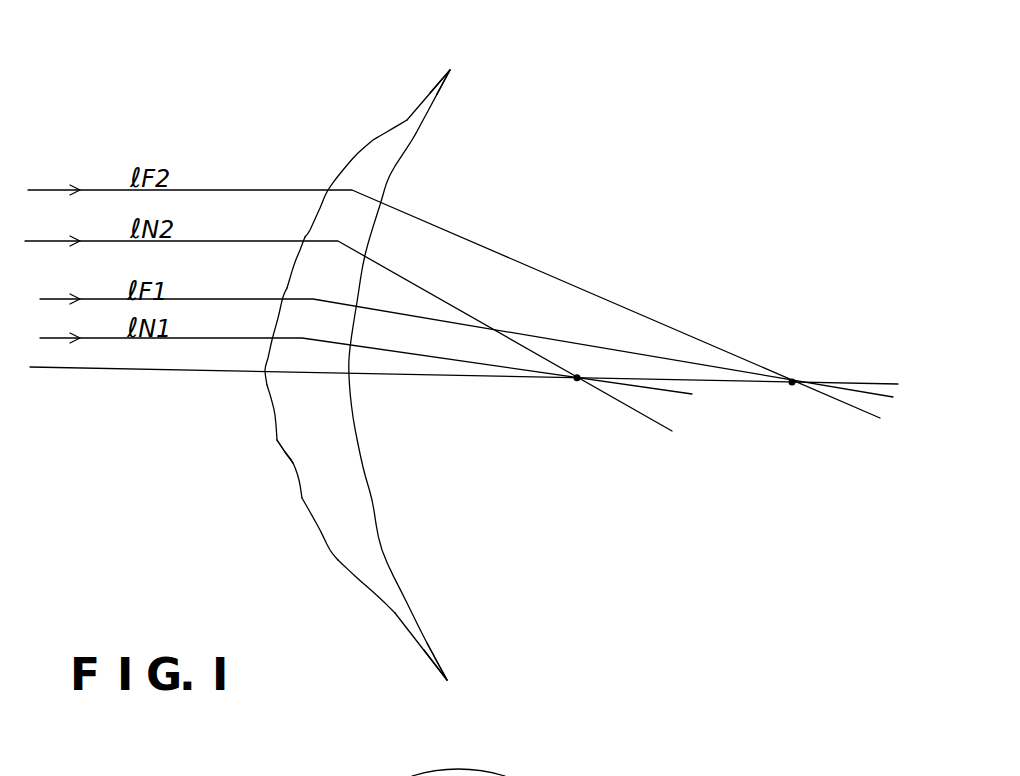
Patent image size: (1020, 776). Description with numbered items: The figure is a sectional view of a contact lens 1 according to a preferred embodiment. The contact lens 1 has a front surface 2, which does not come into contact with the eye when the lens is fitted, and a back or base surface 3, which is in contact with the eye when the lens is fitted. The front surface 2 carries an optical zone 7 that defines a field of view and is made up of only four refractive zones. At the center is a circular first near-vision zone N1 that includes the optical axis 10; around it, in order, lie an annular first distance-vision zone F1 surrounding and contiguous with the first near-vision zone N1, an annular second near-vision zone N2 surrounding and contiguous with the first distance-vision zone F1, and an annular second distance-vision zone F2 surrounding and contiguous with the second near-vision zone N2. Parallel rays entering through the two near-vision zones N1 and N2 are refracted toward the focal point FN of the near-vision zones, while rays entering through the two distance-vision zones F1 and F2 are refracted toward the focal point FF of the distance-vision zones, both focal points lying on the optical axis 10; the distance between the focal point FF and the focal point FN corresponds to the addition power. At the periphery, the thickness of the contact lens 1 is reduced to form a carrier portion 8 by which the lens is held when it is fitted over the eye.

The contact lens 1 is at (328, 356).
The front surface 2 is at (316, 375).
The back or base surface 3 is at (410, 145).
The optical zone 7 is at (280, 470).
The carrier portion 8 is at (433, 90).
The optical axis 10 is at (75, 370).
The first distance-vision zone F1 is at (285, 290).
The second distance-vision zone F2 is at (342, 173).
The first near-vision zone N1 is at (264, 385).
The second near-vision zone N2 is at (308, 232).
The focal point of the near-vision zones FN is at (574, 404).
The focal point of the distance-vision zones FF is at (781, 410).